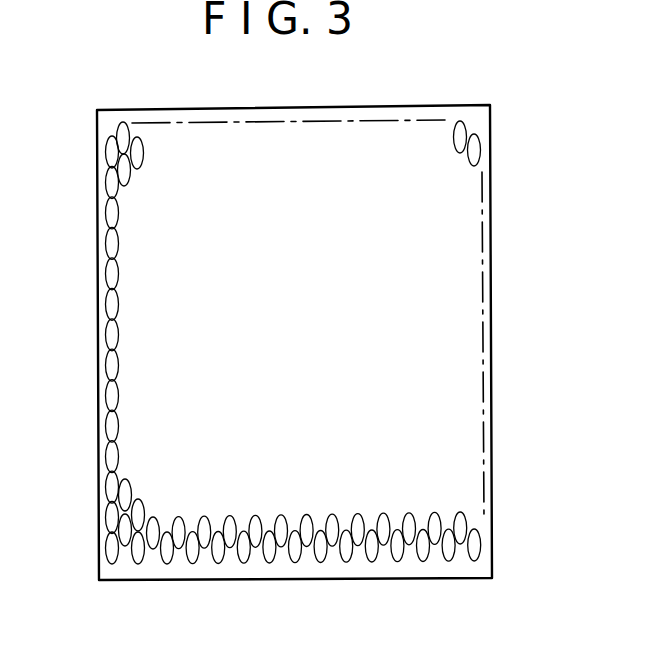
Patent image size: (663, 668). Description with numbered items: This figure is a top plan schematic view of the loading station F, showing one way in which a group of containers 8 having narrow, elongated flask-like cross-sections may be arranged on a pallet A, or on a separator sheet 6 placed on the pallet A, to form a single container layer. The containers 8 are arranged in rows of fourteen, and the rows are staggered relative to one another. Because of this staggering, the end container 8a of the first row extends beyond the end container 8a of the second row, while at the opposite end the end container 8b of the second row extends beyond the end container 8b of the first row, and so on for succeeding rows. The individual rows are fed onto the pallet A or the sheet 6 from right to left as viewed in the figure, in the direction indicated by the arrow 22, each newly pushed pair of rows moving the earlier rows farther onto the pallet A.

The separator sheet 6 is at (428, 105).
The containers 8 is at (110, 370).
The end container 8a is at (113, 550).
The end container 8b is at (112, 153).
The pallet A is at (371, 93).
The loading station F is at (84, 304).
The arrow 22 is at (522, 328).